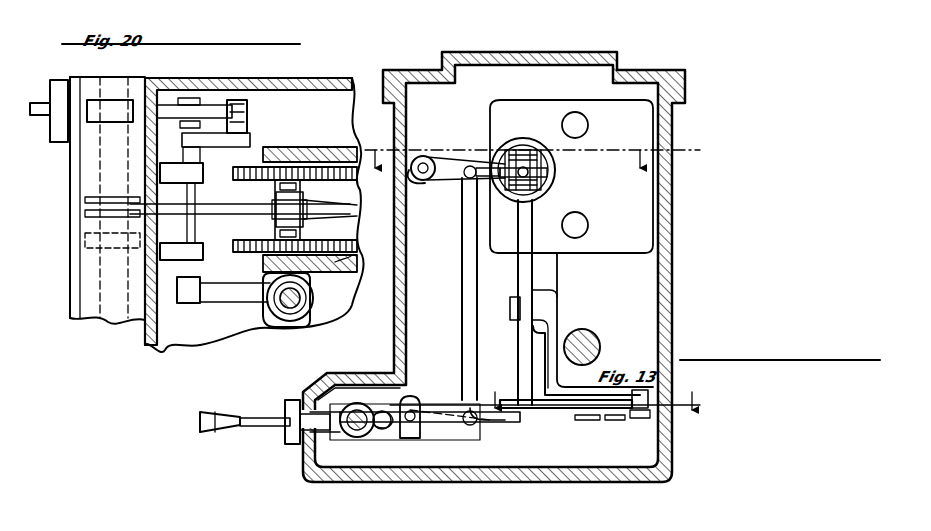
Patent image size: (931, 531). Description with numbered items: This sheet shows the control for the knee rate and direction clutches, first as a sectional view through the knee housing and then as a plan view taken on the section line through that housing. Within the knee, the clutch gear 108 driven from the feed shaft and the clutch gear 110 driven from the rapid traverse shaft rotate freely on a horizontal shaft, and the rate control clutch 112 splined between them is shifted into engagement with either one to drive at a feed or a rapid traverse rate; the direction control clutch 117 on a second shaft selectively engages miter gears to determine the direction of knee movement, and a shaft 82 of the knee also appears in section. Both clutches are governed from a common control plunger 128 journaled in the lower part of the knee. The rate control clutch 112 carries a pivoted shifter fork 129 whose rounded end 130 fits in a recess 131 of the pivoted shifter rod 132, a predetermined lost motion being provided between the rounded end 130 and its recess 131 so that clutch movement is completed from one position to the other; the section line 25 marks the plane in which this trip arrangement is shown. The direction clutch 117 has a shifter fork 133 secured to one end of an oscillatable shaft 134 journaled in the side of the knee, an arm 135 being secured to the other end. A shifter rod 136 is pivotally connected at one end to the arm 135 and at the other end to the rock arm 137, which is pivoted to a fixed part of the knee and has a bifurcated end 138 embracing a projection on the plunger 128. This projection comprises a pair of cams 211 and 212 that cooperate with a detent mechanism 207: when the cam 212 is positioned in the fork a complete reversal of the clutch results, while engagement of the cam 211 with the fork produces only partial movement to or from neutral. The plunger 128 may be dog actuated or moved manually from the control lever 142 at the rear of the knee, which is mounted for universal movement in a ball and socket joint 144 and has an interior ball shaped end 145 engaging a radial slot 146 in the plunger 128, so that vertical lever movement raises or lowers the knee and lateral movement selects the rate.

In FIG. 13, the section line 25- 25 is at (550, 416).
In FIG. 13, the shaft 82 is at (600, 350).
In FIG. 13, the clutch gear 108 is at (530, 155).
In FIG. 20, the clutch gear 110 is at (350, 262).
In FIG. 20, the rate control clutch 112 is at (306, 198).
In FIG. 13, the rate control clutch 112 is at (545, 163).
In FIG. 20, the direction control clutch 117 is at (272, 292).
In FIG. 13, the direction control clutch 117 is at (530, 175).
In FIG. 20, the control plunger 128 is at (140, 78).
In FIG. 13, the control plunger 128 is at (356, 440).
In FIG. 20, the pivoted shifter fork 129 is at (352, 223).
In FIG. 13, the pivoted shifter fork 129 is at (527, 272).
In FIG. 13, the rounded end 130 is at (520, 410).
In FIG. 13, the recess 131 is at (508, 420).
In FIG. 20, the pivoted shifter rod 132 is at (215, 210).
In FIG. 13, the pivoted shifter rod 132 is at (606, 420).
In FIG. 20, the shifter fork 133 is at (203, 305).
In FIG. 13, the shifter fork 133 is at (455, 180).
In FIG. 20, the oscillatable shaft 134 is at (192, 226).
In FIG. 13, the oscillatable shaft 134 is at (430, 158).
In FIG. 20, the arm 135 is at (252, 136).
In FIG. 20, the shifter rod 136 is at (245, 104).
In FIG. 13, the shifter rod 136 is at (466, 261).
In FIG. 20, the rock arm 137 is at (215, 100).
In FIG. 13, the rock arm 137 is at (470, 430).
In FIG. 13, the bifurcated end 138 is at (382, 445).
In FIG. 20, the control lever 142 is at (45, 100).
In FIG. 13, the control lever 142 is at (212, 412).
In FIG. 13, the ball and socket joint 144 is at (292, 452).
In FIG. 13, the ball shaped end 145 is at (305, 470).
In FIG. 13, the radial slot 146 is at (335, 385).
In FIG. 20, the detent mechanism 207 is at (85, 240).
In FIG. 13, the cam 211 is at (395, 412).
In FIG. 13, the cam 212 is at (385, 445).